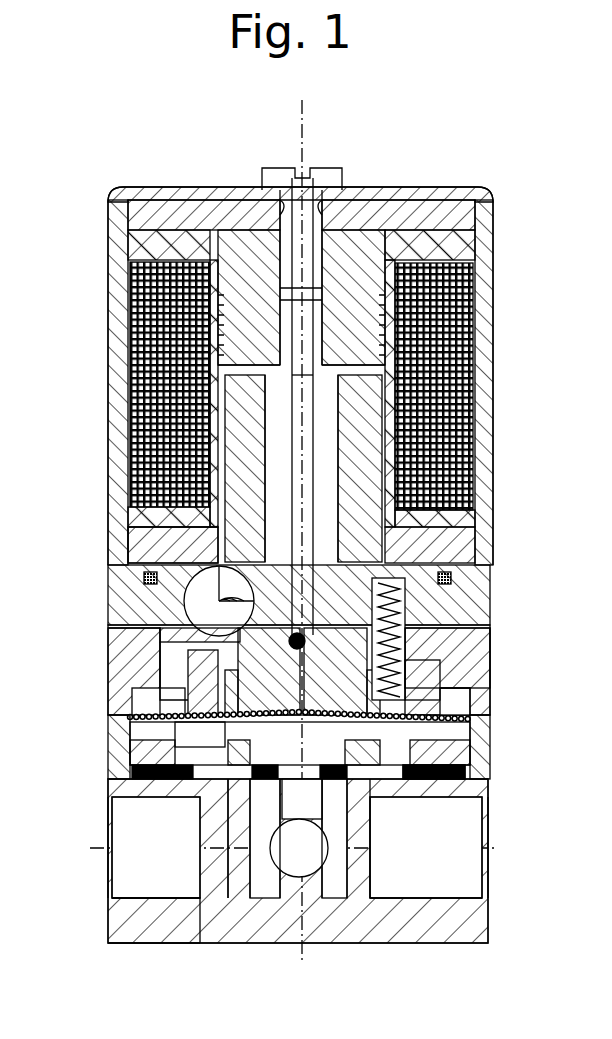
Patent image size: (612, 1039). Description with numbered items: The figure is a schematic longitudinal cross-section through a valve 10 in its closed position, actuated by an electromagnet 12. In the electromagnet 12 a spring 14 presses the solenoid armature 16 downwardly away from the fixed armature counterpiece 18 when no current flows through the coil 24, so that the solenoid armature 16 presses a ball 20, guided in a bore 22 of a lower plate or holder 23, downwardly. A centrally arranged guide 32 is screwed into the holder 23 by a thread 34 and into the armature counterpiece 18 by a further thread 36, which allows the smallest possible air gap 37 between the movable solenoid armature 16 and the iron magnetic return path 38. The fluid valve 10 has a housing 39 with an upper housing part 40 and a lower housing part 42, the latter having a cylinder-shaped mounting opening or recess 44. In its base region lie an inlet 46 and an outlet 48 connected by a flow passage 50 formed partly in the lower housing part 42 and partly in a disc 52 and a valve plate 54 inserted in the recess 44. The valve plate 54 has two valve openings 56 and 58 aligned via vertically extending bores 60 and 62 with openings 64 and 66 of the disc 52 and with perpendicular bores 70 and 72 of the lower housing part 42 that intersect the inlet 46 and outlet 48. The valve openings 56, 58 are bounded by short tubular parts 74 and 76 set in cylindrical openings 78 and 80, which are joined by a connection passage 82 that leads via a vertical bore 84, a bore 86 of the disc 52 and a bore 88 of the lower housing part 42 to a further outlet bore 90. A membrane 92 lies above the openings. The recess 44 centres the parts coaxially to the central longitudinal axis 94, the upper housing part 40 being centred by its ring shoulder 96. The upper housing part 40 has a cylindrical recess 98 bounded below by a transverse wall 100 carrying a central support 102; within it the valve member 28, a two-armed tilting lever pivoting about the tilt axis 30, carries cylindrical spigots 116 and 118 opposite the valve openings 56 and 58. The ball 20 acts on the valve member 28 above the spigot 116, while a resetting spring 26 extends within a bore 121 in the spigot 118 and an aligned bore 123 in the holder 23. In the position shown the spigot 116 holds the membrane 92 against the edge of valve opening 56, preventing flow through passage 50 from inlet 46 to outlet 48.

The valve 10 is at (104, 788).
The electromagnet 12 is at (492, 287).
The spring 14 is at (395, 358).
The solenoid armature 16 is at (380, 468).
The fixed armature counterpiece 18 is at (375, 240).
The ball 20 is at (135, 545).
The bore 22 is at (195, 615).
The lower plate or holder 23 is at (215, 580).
The coil 24 is at (135, 287).
The resetting spring 26 is at (395, 625).
The valve member 28 is at (150, 660).
The tilt axis 30 is at (306, 560).
The guide 32 is at (323, 408).
The thread 34 is at (150, 510).
The further thread 36 is at (410, 330).
The air gap 37 is at (175, 465).
The magnetic return path 38 is at (128, 216).
The housing 39 is at (118, 925).
The upper housing part 40 is at (478, 662).
The lower housing part 42 is at (488, 930).
The mounting opening or recess 44 is at (135, 720).
The inlet 46 is at (108, 878).
The outlet 48 is at (488, 880).
The flow passage 50 is at (140, 897).
The disc 52 is at (215, 840).
The valve plate 54 is at (195, 760).
The valve opening 56 is at (195, 748).
The valve opening 58 is at (420, 786).
The vertically extending bore 60 is at (185, 792).
The vertically extending bore 62 is at (465, 780).
The opening 64 is at (200, 806).
The opening 66 is at (392, 808).
The perpendicular bore 70 is at (208, 852).
The perpendicular bore 72 is at (395, 848).
The tubular part 74 is at (200, 745).
The tubular part 76 is at (420, 752).
The cylindrical opening 78 is at (150, 800).
The cylindrical opening 80 is at (480, 775).
The connection passage 82 is at (228, 820).
The vertical bore 84 is at (265, 782).
The vertically arranged bore 86 is at (355, 790).
The vertically arranged bore 88 is at (294, 800).
The further outlet bore 90 is at (305, 878).
The membrane 92 is at (365, 722).
The central longitudinal axis 94 is at (322, 142).
The ring shoulder 96 is at (400, 726).
The cylindrical recess or space 98 is at (425, 645).
The transverse wall 100 is at (205, 692).
The support 102 is at (290, 555).
The cylindrical spigot 116 is at (200, 690).
The cylindrical spigot 118 is at (480, 700).
The bore 121 is at (435, 685).
The bore 123 is at (405, 600).